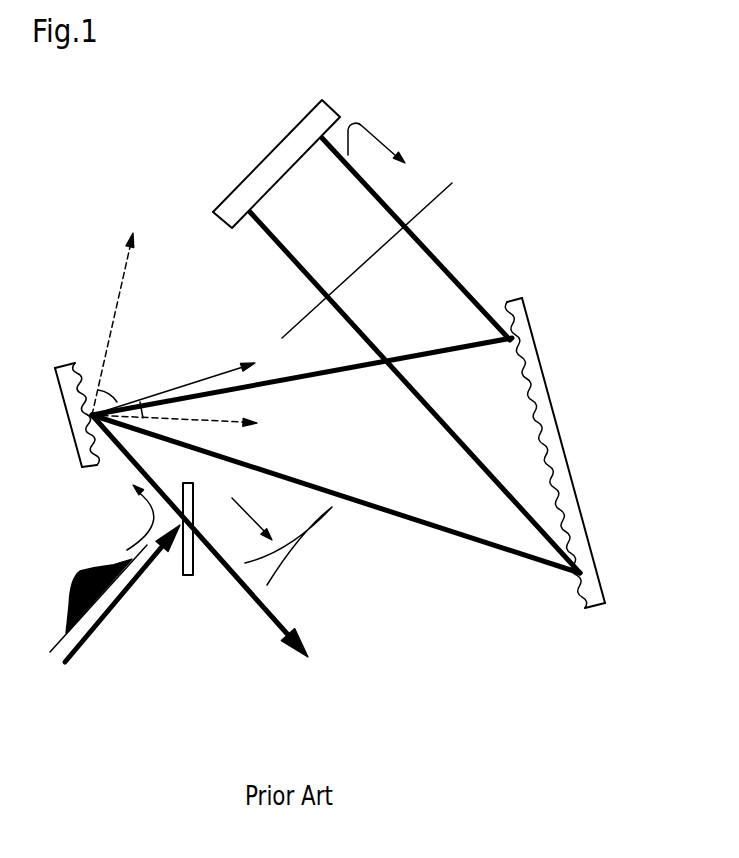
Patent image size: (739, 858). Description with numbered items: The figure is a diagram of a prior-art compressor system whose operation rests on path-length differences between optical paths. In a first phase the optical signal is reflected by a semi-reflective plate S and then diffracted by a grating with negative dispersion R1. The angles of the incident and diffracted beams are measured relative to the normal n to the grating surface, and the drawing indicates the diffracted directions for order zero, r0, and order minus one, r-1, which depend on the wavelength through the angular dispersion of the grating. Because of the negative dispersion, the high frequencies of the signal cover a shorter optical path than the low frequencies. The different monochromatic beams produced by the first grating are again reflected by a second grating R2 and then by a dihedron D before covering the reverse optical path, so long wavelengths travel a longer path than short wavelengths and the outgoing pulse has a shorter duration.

The dihedron D is at (309, 164).
The grating with negative dispersion R1 is at (60, 415).
The second grating R2 is at (558, 453).
The semi-reflective plate S is at (186, 546).
The normal n is at (173, 376).
The diffracted beam angle in order zero r0 is at (113, 324).
The diffracted beam angle in order minus one r-1 is at (174, 410).